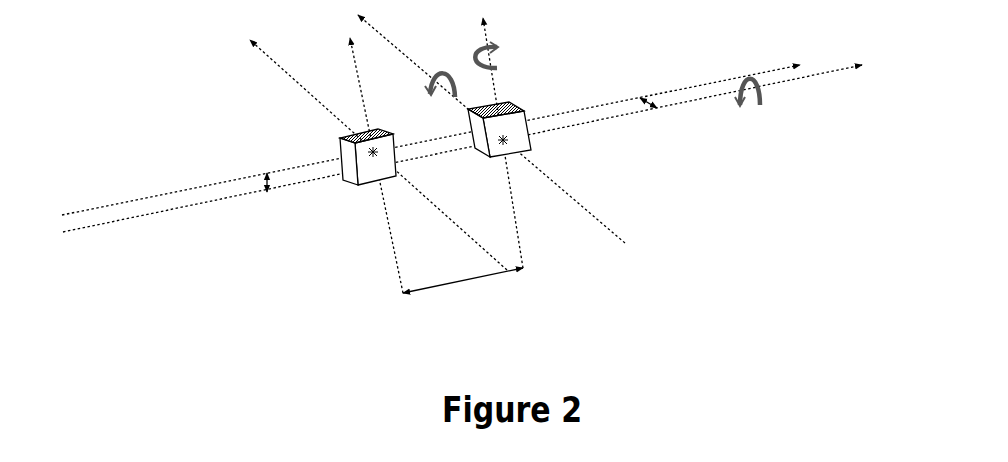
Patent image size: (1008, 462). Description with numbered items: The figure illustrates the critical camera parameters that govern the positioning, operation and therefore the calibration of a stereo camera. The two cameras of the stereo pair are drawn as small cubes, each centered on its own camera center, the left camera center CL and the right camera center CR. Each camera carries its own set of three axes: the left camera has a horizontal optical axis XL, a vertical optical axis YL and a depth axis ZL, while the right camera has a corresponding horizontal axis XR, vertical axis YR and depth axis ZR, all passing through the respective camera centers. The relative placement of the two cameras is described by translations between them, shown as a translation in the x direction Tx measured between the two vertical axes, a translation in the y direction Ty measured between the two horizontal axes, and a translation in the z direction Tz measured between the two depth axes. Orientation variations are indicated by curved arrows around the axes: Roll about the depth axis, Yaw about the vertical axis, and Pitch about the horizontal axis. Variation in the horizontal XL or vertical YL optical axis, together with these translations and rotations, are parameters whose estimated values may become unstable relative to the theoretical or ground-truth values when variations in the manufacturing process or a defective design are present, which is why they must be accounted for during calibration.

The horizontal optical axis of left camera XL is at (431, 123).
The horizontal axis of right camera XR is at (464, 148).
The vertical optical axis of left camera YL is at (364, 165).
The vertical axis of right camera YR is at (503, 143).
The z axis of left camera ZL is at (369, 155).
The z axis of right camera ZR is at (491, 121).
The left camera center CL is at (380, 155).
The right camera center CR is at (515, 130).
The translation in the x direction Tx is at (463, 291).
The translation in the y direction Ty is at (268, 199).
The translation in the z direction Tz is at (634, 100).
The roll Roll is at (429, 69).
The yaw Yaw is at (512, 54).
The pitch Pitch is at (753, 109).